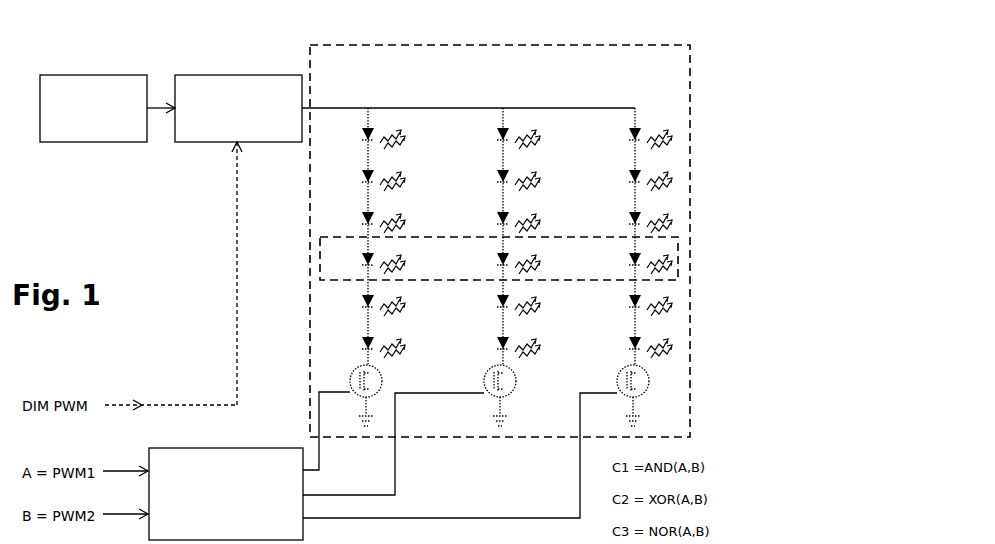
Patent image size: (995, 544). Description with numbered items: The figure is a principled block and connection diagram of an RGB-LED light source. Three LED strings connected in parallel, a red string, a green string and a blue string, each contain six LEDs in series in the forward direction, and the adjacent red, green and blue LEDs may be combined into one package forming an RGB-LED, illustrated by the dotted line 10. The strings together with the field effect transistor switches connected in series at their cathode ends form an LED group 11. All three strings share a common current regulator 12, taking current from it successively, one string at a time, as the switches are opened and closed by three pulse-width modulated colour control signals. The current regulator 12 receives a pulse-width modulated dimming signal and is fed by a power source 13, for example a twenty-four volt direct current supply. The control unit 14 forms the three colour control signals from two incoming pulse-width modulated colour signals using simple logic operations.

The RGB-LED 10 is at (678, 256).
The LED group 11 is at (510, 224).
The current regulator 12 is at (252, 75).
The power source 13 is at (102, 75).
The control unit 14 is at (193, 448).